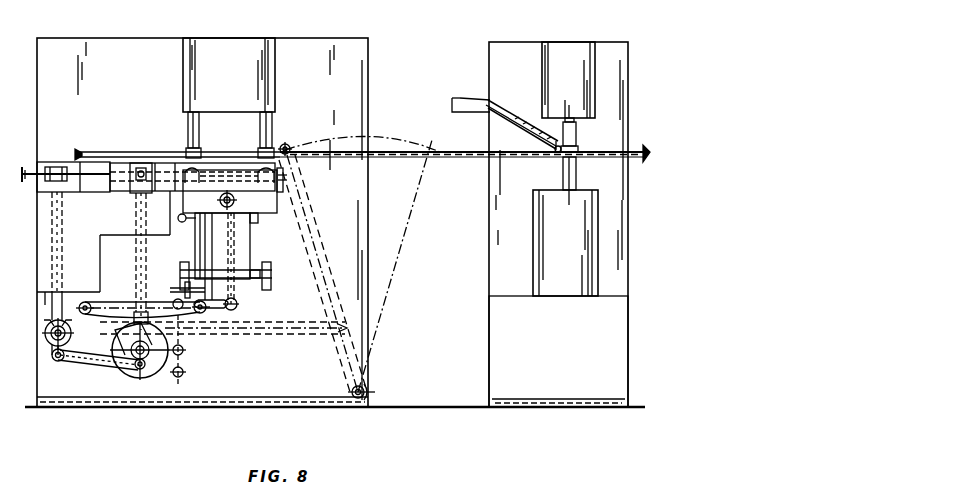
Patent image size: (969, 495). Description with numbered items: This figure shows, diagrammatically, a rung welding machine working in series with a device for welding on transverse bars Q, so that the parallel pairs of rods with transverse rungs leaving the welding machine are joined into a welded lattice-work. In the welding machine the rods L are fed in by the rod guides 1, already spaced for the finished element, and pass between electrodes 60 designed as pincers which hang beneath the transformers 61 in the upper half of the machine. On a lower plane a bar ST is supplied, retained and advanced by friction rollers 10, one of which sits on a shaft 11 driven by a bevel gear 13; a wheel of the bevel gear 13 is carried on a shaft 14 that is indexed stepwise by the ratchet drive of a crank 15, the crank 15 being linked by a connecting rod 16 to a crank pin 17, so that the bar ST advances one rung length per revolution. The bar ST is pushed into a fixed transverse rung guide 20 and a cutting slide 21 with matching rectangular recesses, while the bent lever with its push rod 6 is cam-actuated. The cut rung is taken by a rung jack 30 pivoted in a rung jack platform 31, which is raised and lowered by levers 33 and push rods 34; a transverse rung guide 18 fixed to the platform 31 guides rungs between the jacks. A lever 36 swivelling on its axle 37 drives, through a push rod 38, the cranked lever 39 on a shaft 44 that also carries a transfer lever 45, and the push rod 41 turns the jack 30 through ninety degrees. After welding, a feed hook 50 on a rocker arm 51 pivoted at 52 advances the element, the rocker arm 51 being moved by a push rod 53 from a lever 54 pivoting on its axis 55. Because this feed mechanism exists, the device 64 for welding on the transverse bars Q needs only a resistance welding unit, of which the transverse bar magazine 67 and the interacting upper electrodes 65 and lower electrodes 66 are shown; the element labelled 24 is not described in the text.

The rod guide 1 is at (110, 152).
The push rod 6 is at (136, 262).
The friction roller 10 is at (62, 167).
The shaft 11 is at (62, 205).
The bevel gear 13 is at (72, 338).
The shaft 14 is at (48, 336).
The crank 15 is at (52, 358).
The connecting rod 16 is at (96, 362).
The crank pin 17 is at (142, 372).
The transverse rung guide 18 is at (230, 190).
The transverse rung guide 20 is at (160, 191).
The cutting slide 21 is at (134, 192).
The bracket 24 is at (290, 183).
The rung jack 30 is at (186, 152).
The rung jack platform 31 is at (222, 246).
The lever 33 is at (215, 312).
The push rod 34 is at (228, 255).
The lever 36 is at (130, 304).
The axle 37 is at (88, 302).
The push rod 38 is at (183, 285).
The cranked lever 39 is at (205, 253).
The push rod 41 is at (256, 222).
The shaft 44 is at (236, 276).
The transfer lever 45 is at (252, 260).
The feed hook 50 is at (288, 145).
The rocker arm 51 is at (318, 250).
The pivot 52 is at (352, 392).
The push rod 53 is at (293, 334).
The lever 54 is at (186, 366).
The axis 55 is at (186, 388).
The electrode 60 is at (200, 135).
The transformer 61 is at (240, 85).
The device for welding on transverse bars 64 is at (568, 358).
The upper electrode 65 is at (578, 138).
The lower electrode 66 is at (576, 176).
The transverse bar magazine 67 is at (506, 112).
The bar ST is at (40, 170).
The rod L is at (352, 156).
The transverse bar Q is at (520, 130).